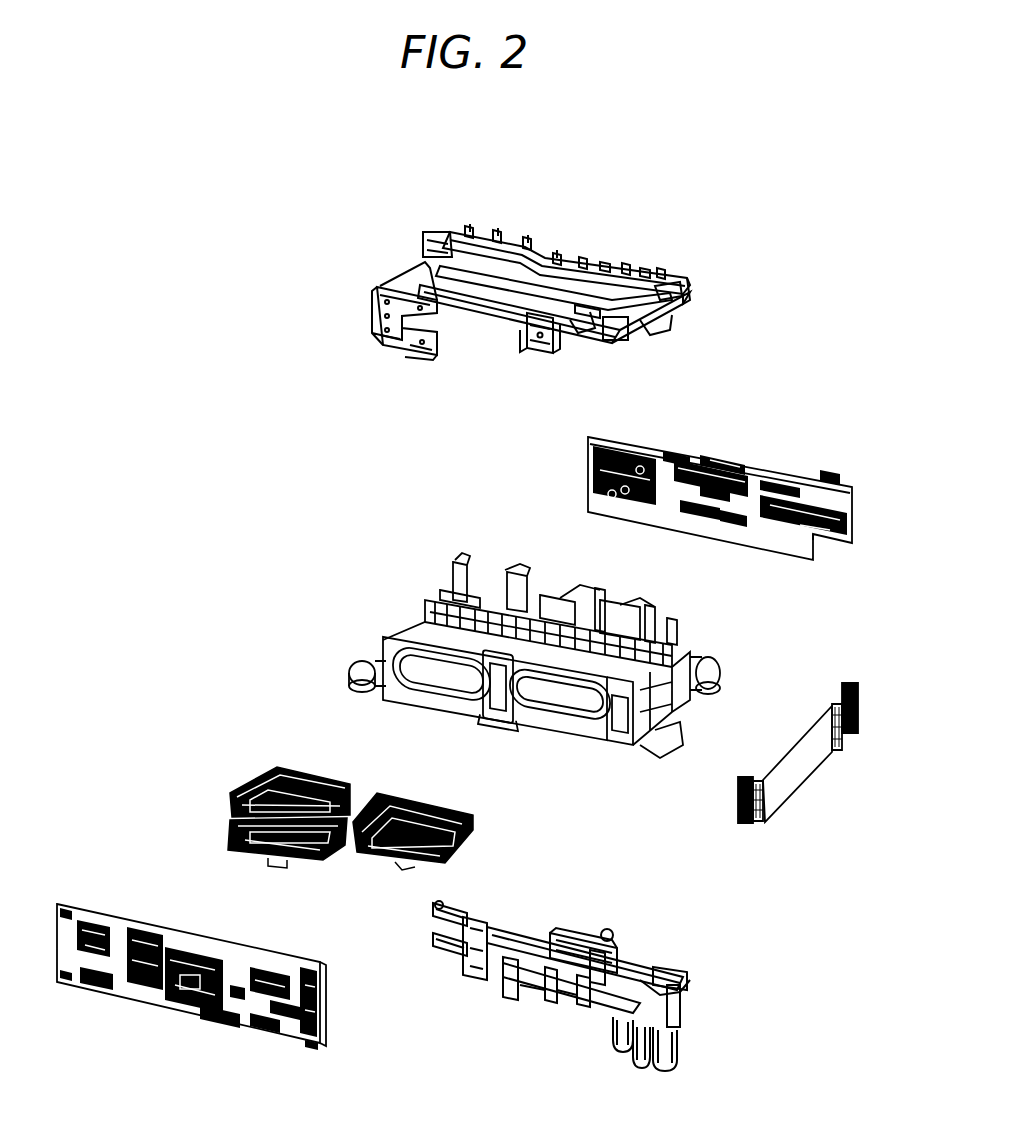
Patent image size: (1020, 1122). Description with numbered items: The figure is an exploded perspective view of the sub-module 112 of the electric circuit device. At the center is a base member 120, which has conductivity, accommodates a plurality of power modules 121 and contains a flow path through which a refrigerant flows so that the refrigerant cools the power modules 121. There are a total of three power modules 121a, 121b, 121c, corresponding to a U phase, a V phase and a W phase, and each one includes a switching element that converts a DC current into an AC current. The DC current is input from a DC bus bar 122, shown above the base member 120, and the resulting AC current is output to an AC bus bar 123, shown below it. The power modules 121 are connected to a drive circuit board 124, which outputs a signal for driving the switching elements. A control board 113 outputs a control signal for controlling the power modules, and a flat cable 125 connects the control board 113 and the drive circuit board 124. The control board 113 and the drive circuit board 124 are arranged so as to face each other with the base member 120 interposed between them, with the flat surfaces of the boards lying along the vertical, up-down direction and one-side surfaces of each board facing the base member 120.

The sub-module 112 is at (310, 172).
The DC bus bar 122 is at (370, 296).
The control board 113 is at (745, 461).
The base member 120 is at (440, 577).
The power modules 121 is at (245, 598).
The power module 121a is at (392, 797).
The power module 121b is at (260, 770).
The power module 121c is at (240, 840).
The flat cable 125 is at (785, 795).
The drive circuit board 124 is at (322, 1000).
The AC bus bar 123 is at (687, 990).